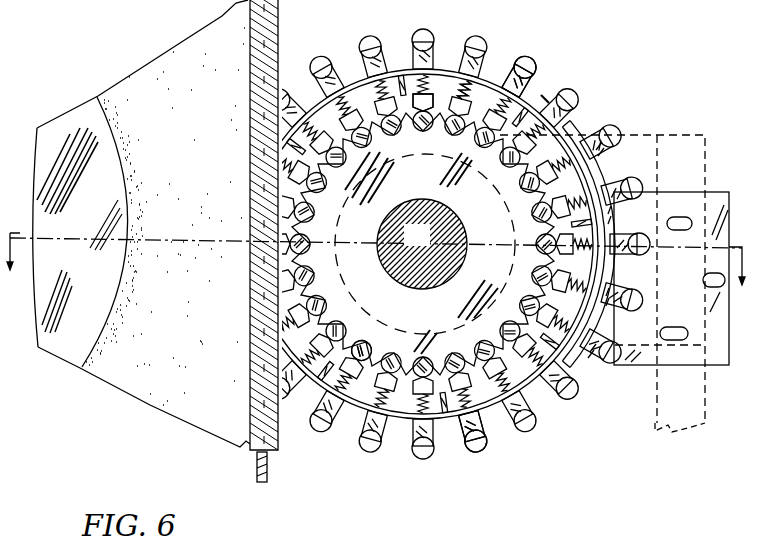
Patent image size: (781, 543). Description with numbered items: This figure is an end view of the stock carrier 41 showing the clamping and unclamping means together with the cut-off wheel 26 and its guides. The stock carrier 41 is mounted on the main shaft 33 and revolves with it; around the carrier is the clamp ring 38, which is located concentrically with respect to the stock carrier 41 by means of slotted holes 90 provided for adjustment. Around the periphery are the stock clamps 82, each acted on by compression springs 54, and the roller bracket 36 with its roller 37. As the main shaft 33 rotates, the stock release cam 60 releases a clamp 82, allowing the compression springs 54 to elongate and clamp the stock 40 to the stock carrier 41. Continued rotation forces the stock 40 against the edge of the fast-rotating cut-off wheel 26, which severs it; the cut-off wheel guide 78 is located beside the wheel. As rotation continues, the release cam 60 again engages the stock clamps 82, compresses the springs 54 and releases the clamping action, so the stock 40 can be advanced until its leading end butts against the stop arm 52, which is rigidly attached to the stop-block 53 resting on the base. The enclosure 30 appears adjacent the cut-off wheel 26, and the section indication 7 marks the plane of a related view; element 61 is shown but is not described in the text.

The cut-off wheel 26 is at (136, 93).
The enclosure 30 is at (250, 449).
The cut-off wheel guide 78 is at (270, 468).
The roller bracket 36 is at (527, 89).
The roller 37 is at (532, 62).
The compression springs 54 is at (470, 90).
The stock clamp 82 is at (430, 97).
The clamp ring 38 is at (487, 408).
The stock 40 is at (366, 352).
The stock carrier 41 is at (408, 184).
The main shaft 33 is at (428, 245).
The stock release cam 60 is at (612, 272).
The mounting plate 61 is at (712, 202).
The slotted holes 90 is at (675, 330).
The stop arm 52 is at (636, 157).
The stop-block 53 is at (662, 443).
The section line 7- 7 is at (375, 271).